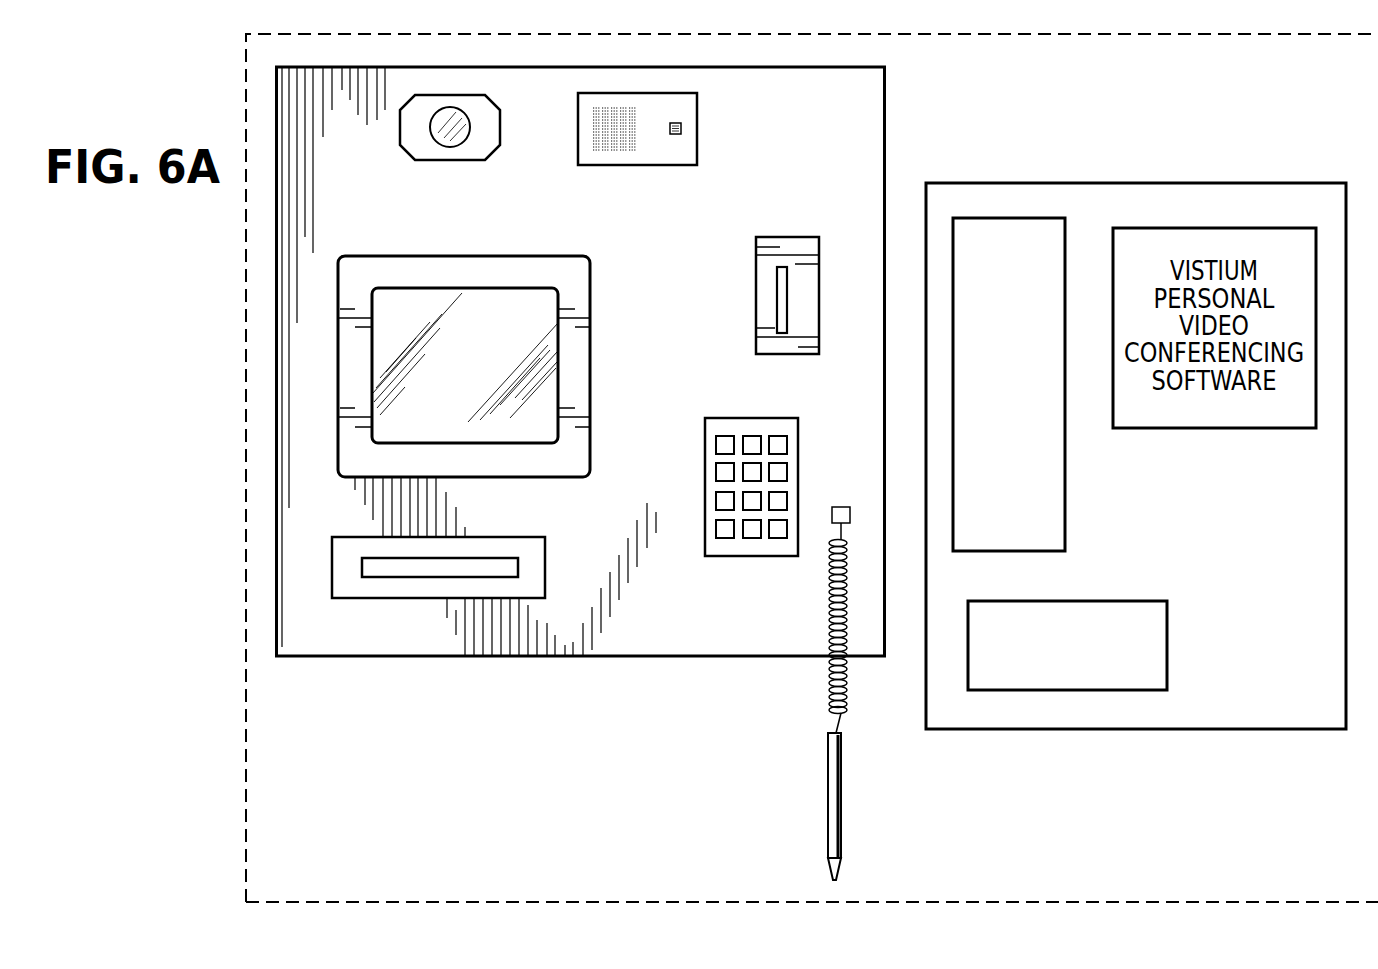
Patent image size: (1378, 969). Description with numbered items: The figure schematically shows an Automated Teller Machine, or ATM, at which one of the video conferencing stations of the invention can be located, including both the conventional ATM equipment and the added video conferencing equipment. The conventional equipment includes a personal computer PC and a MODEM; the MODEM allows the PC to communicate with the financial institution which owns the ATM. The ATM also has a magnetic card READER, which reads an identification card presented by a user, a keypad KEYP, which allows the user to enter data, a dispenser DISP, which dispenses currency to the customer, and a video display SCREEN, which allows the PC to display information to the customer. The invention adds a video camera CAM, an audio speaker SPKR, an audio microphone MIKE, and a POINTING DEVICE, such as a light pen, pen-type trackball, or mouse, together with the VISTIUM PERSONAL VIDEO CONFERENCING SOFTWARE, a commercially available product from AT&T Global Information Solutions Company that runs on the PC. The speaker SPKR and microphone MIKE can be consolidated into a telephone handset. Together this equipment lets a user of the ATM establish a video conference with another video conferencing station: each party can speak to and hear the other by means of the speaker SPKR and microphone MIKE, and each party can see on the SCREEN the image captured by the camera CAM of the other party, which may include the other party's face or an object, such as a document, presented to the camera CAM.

The video camera CAM is at (413, 144).
The audio speaker SPKR is at (603, 149).
The audio microphone MIKE is at (681, 128).
The video display SCREEN is at (470, 298).
The magnetic card reader READER is at (768, 277).
The keypad KEYP is at (762, 546).
The dispenser DISP is at (412, 587).
The pointing device POINTING DEVICE is at (833, 778).
The personal computer PC is at (1009, 384).
The modem MODEM is at (1067, 645).